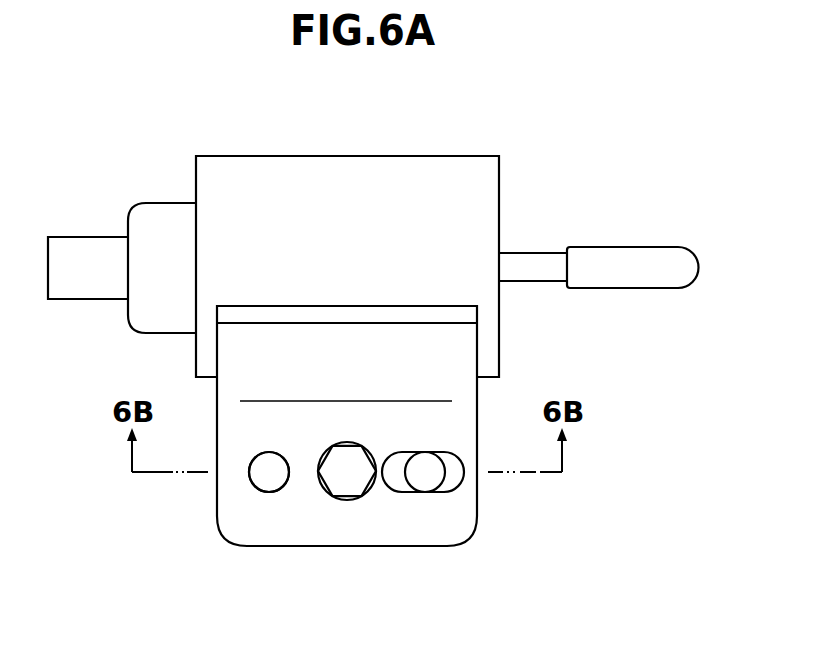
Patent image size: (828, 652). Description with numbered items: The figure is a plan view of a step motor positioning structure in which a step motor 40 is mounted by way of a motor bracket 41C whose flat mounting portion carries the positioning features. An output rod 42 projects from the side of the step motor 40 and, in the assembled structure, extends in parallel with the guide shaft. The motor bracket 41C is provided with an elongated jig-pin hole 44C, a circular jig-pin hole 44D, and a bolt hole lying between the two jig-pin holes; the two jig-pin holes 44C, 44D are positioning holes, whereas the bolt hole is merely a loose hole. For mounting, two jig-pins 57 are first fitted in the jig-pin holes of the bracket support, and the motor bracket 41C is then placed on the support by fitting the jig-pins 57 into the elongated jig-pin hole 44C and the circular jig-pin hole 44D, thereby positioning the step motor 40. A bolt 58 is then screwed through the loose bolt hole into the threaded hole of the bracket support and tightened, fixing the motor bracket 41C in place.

The step motor 40 is at (247, 178).
The output rod 42 is at (541, 252).
The mounting plate 41C is at (452, 348).
The jig-pin 57 is at (268, 478).
The circular jig-pin hole 44D is at (282, 476).
The bolt 58 is at (345, 478).
The elongated jig-pin hole 44C is at (453, 476).